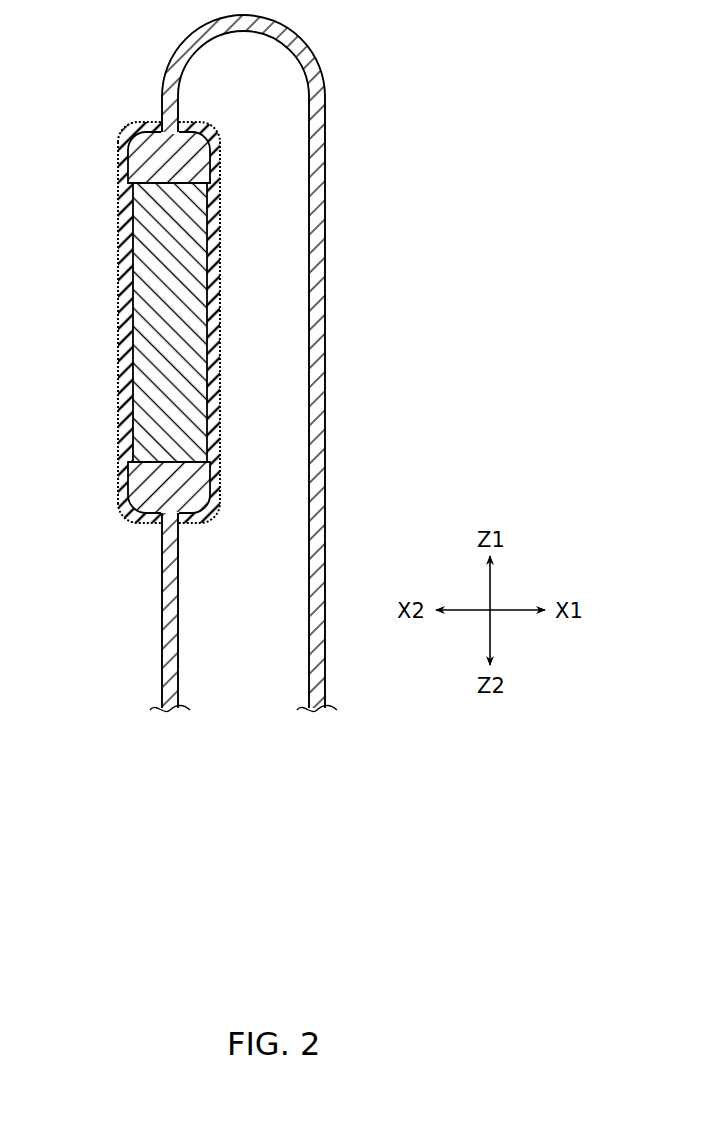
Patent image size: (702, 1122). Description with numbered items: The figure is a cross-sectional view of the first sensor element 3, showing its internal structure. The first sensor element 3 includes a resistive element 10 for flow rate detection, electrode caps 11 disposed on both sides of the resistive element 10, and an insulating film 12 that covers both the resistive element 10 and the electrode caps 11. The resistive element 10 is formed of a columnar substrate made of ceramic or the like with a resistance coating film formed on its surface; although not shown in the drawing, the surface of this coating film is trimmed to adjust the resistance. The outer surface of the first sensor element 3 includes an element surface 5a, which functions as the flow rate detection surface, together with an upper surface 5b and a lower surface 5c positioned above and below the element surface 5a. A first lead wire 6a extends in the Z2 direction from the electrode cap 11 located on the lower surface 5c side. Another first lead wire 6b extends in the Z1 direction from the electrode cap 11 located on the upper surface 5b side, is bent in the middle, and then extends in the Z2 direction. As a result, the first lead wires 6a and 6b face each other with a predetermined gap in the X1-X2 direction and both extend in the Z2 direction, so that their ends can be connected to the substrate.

The first sensor element 3 is at (129, 327).
The element surface 5a is at (122, 306).
The upper surface 5b is at (140, 122).
The lower surface 5c is at (141, 523).
The first lead wire 6a is at (168, 646).
The first lead wire 6b is at (323, 543).
The resistive element for flow rate detection 10 is at (142, 366).
The electrode cap 11 is at (132, 164).
The insulating film 12 is at (128, 258).